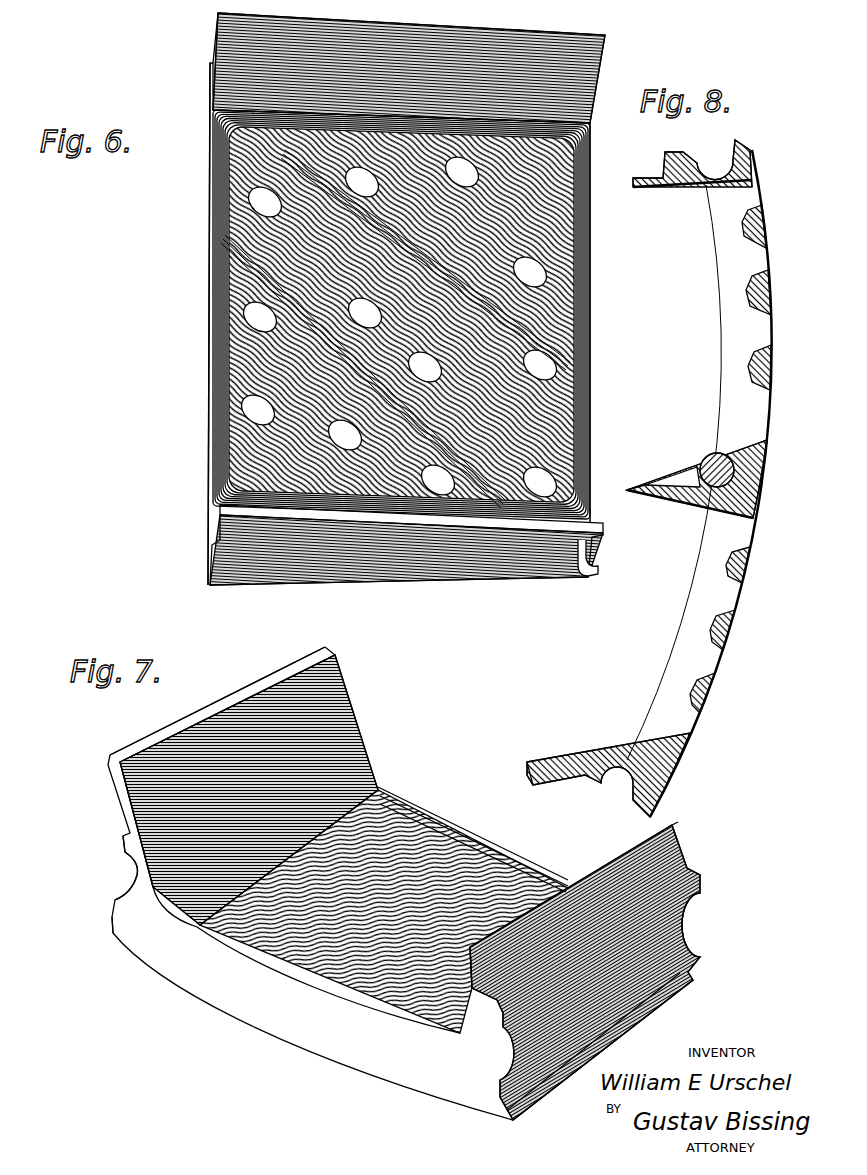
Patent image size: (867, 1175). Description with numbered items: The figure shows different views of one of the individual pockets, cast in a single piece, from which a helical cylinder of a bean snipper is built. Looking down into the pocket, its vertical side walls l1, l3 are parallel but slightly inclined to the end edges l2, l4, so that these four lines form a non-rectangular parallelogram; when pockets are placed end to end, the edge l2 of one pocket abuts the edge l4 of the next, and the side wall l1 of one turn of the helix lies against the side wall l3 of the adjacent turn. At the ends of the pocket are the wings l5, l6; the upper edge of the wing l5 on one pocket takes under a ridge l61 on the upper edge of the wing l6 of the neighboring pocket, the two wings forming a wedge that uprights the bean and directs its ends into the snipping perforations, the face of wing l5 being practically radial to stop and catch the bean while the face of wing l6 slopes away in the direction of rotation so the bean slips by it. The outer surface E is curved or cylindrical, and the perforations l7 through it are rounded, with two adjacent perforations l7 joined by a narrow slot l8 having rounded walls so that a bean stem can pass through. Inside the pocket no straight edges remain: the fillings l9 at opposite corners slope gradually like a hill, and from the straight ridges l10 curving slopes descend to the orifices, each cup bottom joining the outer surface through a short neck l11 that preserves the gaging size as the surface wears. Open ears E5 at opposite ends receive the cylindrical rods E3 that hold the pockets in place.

In FIG. 6, the vertical side wall l1 is at (598, 386).
In FIG. 7, the vertical side wall l1 is at (488, 840).
In FIG. 6, the end edge l2 is at (390, 578).
In FIG. 8, the end edge l2 is at (753, 497).
In FIG. 7, the end edge l2 is at (625, 1036).
In FIG. 6, the vertical side wall l3 is at (207, 302).
In FIG. 6, the end edge l4 is at (210, 71).
In FIG. 8, the end edge l4 is at (756, 482).
In FIG. 7, the end edge l4 is at (115, 923).
In FIG. 8, the wing l5 is at (690, 505).
In FIG. 7, the wing l5 is at (600, 957).
In FIG. 8, the wing l6 is at (660, 470).
In FIG. 7, the wing l6 is at (283, 782).
In FIG. 8, the ridge l61 is at (628, 488).
In FIG. 7, the ridge l61 is at (110, 757).
In FIG. 6, the perforation l7 is at (308, 363).
In FIG. 8, the perforation l7 is at (757, 258).
In FIG. 6, the slot l8 is at (399, 327).
In FIG. 6, the filling l9 is at (540, 165).
In FIG. 6, the ridge l10 is at (472, 197).
In FIG. 8, the neck l11 is at (768, 268).
In FIG. 7, the outer surface E is at (233, 1008).
In FIG. 8, the cylindrical rod E3 is at (700, 440).
In FIG. 6, the ear E5 is at (632, 548).
In FIG. 8, the ear E5 is at (705, 148).
In FIG. 7, the ear E5 is at (133, 848).